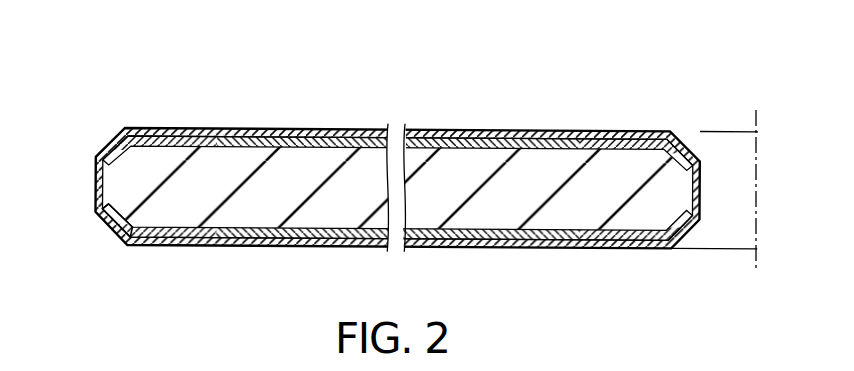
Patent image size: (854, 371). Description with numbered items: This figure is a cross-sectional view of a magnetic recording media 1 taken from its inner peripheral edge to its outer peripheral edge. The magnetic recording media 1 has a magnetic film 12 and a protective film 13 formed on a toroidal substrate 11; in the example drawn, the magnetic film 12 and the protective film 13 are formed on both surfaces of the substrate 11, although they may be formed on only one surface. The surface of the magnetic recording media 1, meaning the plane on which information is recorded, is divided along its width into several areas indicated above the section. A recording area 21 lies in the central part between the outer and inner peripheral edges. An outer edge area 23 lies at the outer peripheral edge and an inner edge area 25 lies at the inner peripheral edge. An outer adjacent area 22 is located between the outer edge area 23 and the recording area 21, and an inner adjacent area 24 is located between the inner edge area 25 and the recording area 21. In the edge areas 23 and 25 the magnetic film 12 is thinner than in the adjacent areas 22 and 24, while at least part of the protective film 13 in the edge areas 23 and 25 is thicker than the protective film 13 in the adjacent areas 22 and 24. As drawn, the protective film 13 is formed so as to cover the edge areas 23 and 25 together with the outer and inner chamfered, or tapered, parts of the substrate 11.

The magnetic recording media 1 is at (72, 134).
The substrate 11 is at (112, 178).
The magnetic film 12 is at (266, 240).
The protective film 13 is at (171, 248).
The recording area 21 is at (493, 115).
The outer adjacent area 22 is at (302, 115).
The outer edge area 23 is at (217, 115).
The inner adjacent area 24 is at (580, 115).
The inner edge area 25 is at (667, 115).